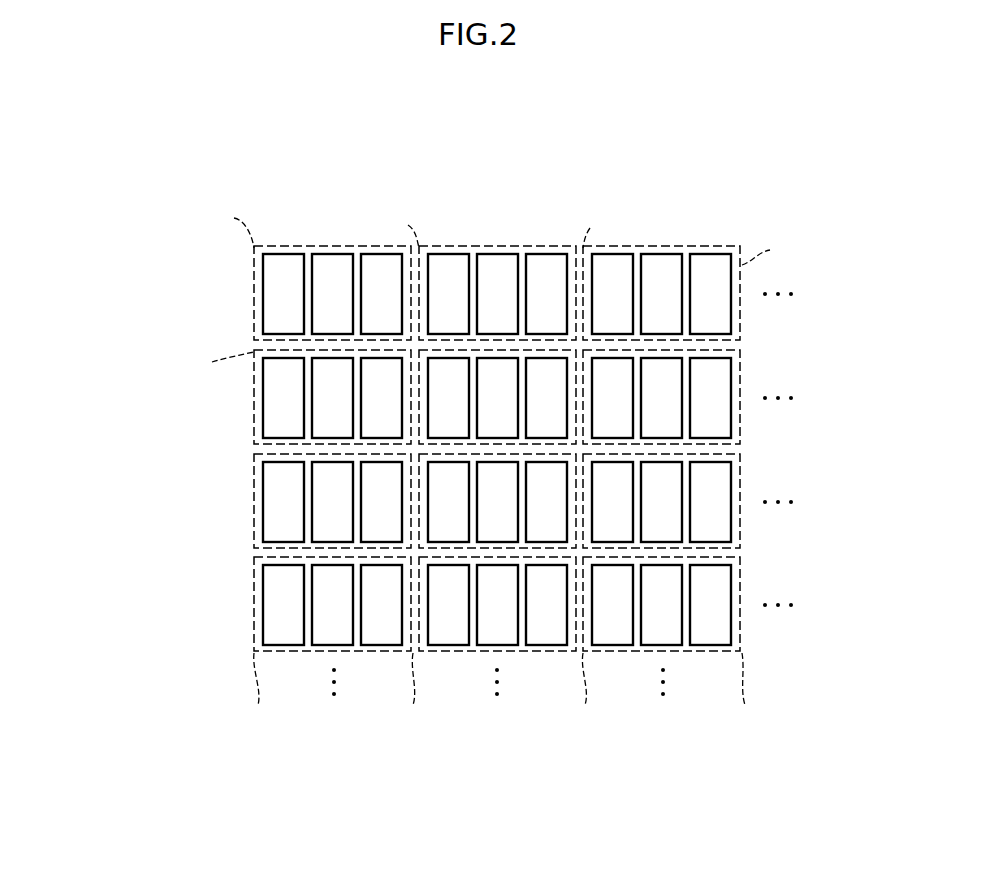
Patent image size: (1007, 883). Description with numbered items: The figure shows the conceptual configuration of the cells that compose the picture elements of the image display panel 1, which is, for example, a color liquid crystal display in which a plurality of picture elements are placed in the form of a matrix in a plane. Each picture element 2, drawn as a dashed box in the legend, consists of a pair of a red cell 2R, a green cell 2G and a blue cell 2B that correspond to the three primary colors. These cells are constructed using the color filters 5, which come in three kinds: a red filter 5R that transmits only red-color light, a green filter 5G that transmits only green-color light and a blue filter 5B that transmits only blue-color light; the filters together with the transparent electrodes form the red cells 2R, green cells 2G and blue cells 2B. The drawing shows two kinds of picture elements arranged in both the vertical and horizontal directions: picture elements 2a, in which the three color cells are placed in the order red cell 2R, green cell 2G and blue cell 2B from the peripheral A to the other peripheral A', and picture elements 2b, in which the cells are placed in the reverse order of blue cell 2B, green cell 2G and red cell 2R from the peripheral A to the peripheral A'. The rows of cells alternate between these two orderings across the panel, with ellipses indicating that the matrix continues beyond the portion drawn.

The image display panel 1 is at (799, 204).
The picture element 2 is at (567, 569).
The picture element 2a is at (102, 365).
The picture element 2b is at (140, 243).
The red cell 2R is at (380, 310).
The green cell 2G is at (328, 290).
The blue cell 2B is at (275, 271).
The color filters 5 is at (748, 187).
The red filter 5R is at (708, 267).
The green filter 5G is at (660, 267).
The blue filter 5B is at (612, 267).